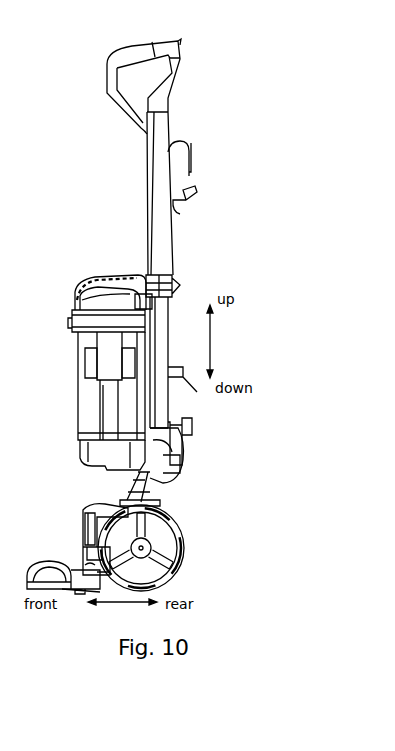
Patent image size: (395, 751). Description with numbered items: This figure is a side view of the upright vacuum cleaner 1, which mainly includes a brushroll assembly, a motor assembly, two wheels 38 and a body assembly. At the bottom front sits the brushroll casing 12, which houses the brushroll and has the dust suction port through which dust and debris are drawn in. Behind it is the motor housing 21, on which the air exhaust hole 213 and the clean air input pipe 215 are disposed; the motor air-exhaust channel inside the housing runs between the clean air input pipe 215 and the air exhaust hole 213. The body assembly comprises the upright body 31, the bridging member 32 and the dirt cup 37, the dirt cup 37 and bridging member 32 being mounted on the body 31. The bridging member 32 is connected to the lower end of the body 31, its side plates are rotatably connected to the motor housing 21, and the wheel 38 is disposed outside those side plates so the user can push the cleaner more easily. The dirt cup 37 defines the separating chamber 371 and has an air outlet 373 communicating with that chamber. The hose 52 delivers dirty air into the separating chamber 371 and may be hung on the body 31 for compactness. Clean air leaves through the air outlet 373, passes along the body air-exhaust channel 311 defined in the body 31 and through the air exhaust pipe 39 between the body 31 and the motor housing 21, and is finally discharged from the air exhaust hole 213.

The upright vacuum cleaner 1 is at (111, 172).
The brushroll casing 12 is at (48, 566).
The motor housing 21 is at (112, 507).
The air exhaust hole 213 is at (85, 528).
The clean air input pipe 215 is at (133, 489).
The body 31 is at (160, 128).
The body air-exhaust channel 311 is at (160, 356).
The bridging member 32 is at (160, 502).
The dirt cup 37 is at (78, 294).
The separating chamber 371 is at (92, 387).
The air outlet 373 is at (172, 289).
The wheel 38 is at (172, 531).
The air exhaust pipe 39 is at (184, 447).
The hose 52 is at (177, 205).